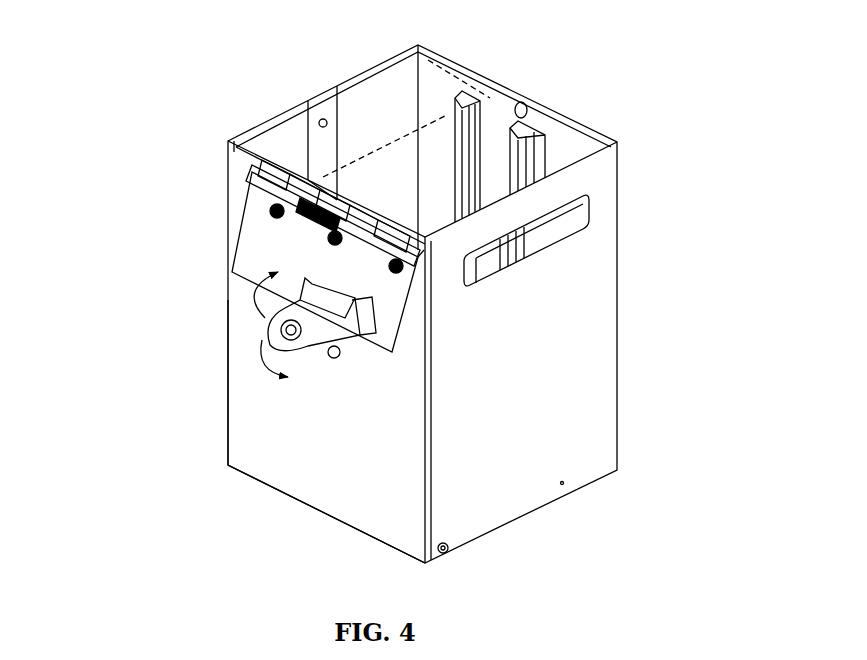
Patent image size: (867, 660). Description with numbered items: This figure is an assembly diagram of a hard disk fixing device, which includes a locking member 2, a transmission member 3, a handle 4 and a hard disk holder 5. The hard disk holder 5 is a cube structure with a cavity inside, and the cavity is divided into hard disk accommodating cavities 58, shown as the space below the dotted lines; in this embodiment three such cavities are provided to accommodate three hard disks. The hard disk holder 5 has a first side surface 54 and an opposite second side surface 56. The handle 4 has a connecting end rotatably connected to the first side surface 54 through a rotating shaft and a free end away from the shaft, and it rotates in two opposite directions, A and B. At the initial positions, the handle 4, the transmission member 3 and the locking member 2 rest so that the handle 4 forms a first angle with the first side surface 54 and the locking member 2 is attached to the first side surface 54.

The locking member 2 is at (262, 183).
The transmission member 3 is at (255, 282).
The handle 4 is at (265, 330).
The hard disk holder 5 is at (498, 303).
The first side surface 54 is at (268, 422).
The second side surface 56 is at (548, 127).
The hard disk accommodating cavity 58 is at (441, 78).